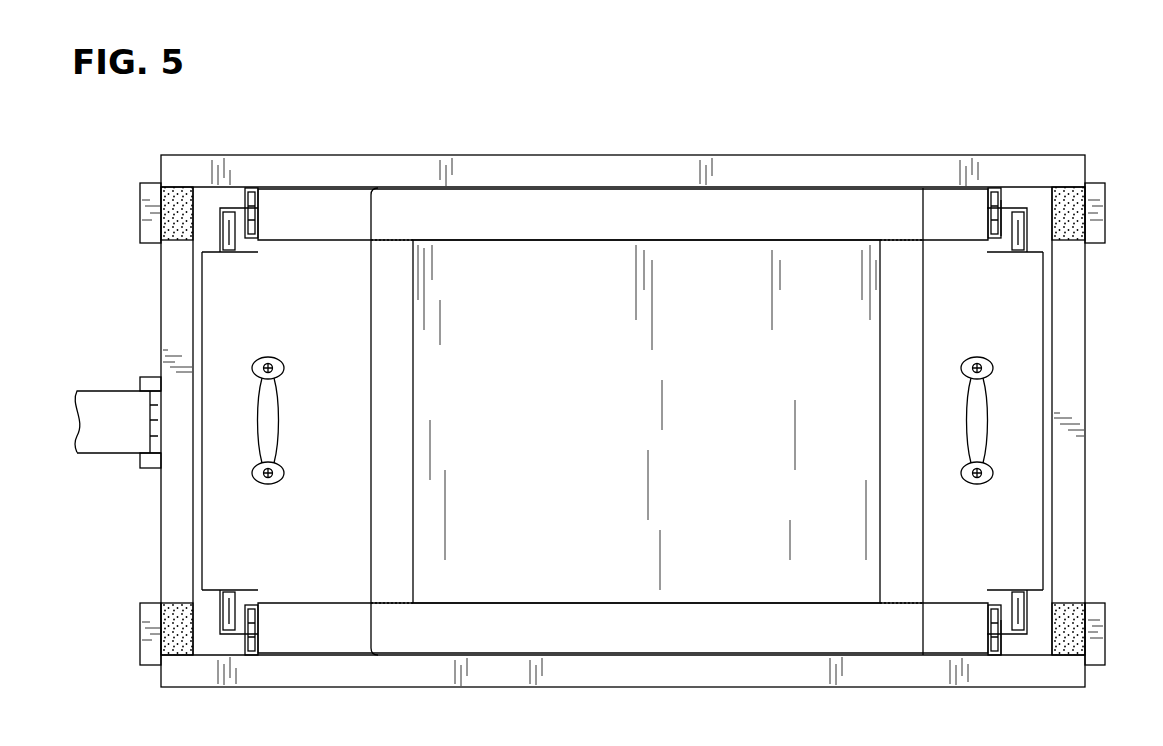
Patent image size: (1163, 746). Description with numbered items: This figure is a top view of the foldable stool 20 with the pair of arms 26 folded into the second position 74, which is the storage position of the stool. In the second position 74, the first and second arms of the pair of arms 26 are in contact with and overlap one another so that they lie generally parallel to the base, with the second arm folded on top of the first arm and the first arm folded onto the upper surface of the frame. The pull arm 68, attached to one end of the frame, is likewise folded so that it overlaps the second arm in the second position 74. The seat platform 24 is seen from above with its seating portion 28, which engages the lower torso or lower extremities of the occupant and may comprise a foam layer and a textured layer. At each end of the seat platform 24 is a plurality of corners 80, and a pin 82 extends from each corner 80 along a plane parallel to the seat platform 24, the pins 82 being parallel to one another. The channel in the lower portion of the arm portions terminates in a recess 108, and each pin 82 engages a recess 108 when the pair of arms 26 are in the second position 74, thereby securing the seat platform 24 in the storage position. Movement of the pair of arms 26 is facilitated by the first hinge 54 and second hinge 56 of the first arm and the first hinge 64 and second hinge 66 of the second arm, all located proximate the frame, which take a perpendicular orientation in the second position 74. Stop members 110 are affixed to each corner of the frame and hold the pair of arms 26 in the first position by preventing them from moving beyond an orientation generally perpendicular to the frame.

The foldable stool 20 is at (784, 138).
The seat platform 24 is at (1050, 362).
The pair of arms 26 is at (416, 180).
The seating portion 28 is at (537, 436).
The first hinge 54 is at (253, 657).
The second hinge 56 is at (253, 188).
The first hinge 64 is at (991, 657).
The second hinge 66 is at (993, 188).
The pull arm 68 is at (103, 390).
The second position 74 is at (508, 106).
The corners 80 is at (205, 240).
The pins 82 is at (1037, 243).
The recess 108 is at (1005, 208).
The stop members 110 is at (140, 218).